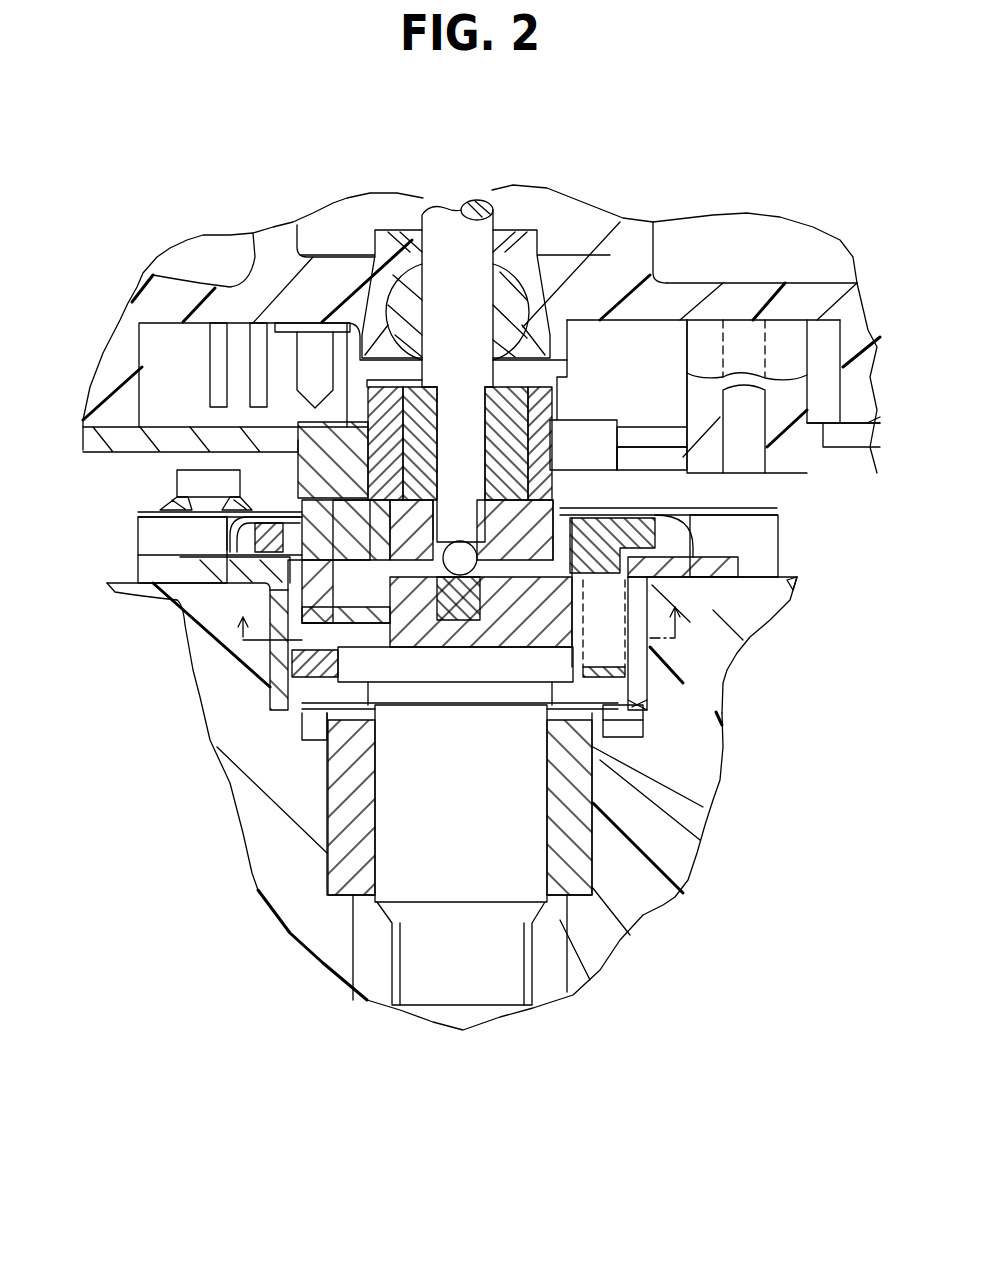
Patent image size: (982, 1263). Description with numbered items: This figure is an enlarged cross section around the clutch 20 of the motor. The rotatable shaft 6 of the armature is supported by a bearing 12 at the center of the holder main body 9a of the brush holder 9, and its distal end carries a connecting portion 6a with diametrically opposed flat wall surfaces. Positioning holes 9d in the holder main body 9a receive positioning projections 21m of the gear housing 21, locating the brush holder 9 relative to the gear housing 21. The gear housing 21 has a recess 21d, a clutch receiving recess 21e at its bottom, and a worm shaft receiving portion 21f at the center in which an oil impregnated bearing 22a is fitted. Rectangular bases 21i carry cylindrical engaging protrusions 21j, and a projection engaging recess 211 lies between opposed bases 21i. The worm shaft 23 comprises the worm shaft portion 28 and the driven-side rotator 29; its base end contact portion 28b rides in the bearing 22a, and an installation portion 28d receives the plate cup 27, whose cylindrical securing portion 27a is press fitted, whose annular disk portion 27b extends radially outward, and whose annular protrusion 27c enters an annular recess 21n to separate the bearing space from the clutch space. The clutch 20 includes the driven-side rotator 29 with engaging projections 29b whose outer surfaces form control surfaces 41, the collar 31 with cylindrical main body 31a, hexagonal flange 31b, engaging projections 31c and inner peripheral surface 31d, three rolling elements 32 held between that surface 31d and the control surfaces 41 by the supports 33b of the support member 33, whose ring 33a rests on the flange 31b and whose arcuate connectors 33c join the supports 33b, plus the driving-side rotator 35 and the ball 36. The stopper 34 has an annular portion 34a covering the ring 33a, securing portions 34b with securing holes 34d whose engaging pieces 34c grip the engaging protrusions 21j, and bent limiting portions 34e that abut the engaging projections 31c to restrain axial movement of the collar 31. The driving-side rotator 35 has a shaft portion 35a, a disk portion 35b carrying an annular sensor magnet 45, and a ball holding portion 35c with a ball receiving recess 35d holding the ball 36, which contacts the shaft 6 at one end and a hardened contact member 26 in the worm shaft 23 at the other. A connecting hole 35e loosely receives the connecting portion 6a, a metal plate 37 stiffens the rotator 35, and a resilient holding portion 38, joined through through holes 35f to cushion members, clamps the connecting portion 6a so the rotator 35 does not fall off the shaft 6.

The rotatable shaft 6 is at (462, 207).
The connecting portion 6a is at (450, 570).
The brush holder 9 is at (857, 283).
The holder main body 9a is at (653, 220).
The positioning hole 9d is at (760, 462).
The bearing 12 is at (515, 282).
The clutch 20 is at (645, 414).
The gear housing 21 is at (697, 847).
The recess 21d is at (798, 580).
The clutch receiving recess 21e is at (268, 670).
The worm shaft receiving portion 21f is at (353, 950).
The base 21i is at (140, 530).
The engaging protrusion 21j is at (190, 468).
The positioning projection 21m is at (743, 403).
The annular recess 21n is at (620, 735).
The oil impregnated bearing 22a is at (340, 865).
The worm shaft 23 is at (535, 945).
The contact member 26 is at (523, 697).
The plate cup 27 is at (635, 725).
The securing portion 27a is at (390, 705).
The disk portion 27b is at (327, 745).
The annular protrusion 27c is at (297, 727).
The worm shaft portion 28 is at (475, 1020).
The contact portion 28b is at (452, 903).
The installation portion 28d is at (460, 703).
The driven-side rotator 29 is at (517, 690).
The engaging projection 29b is at (640, 705).
The collar 31 is at (745, 558).
The cylindrical main body 31a is at (655, 597).
The flange 31b is at (240, 590).
The engaging projection 31c is at (183, 592).
The inner peripheral surface 31d is at (625, 633).
The rolling element 32 is at (653, 650).
The support member 33 is at (680, 540).
The ring 33a is at (600, 530).
The support 33b is at (612, 470).
The connector 33c is at (292, 662).
The stopper 34 is at (140, 510).
The annular portion 34a is at (267, 498).
The securing portion 34b is at (157, 505).
The engaging piece 34c is at (170, 502).
The securing hole 34d is at (227, 523).
The limiting portion 34e is at (212, 548).
The driving-side rotator 35 is at (560, 377).
The shaft portion 35a is at (370, 407).
The disk portion 35b is at (300, 465).
The ball holding portion 35c is at (490, 577).
The ball receiving recess 35d is at (453, 620).
The connecting hole 35e is at (437, 517).
The through hole 35f is at (617, 475).
The ball 36 is at (465, 553).
The metal plate 37 is at (362, 485).
The resilient holding portion 38 is at (460, 407).
The control surface 41 is at (583, 597).
The sensor magnet 45 is at (296, 437).
The projection engaging recess 211 is at (240, 603).